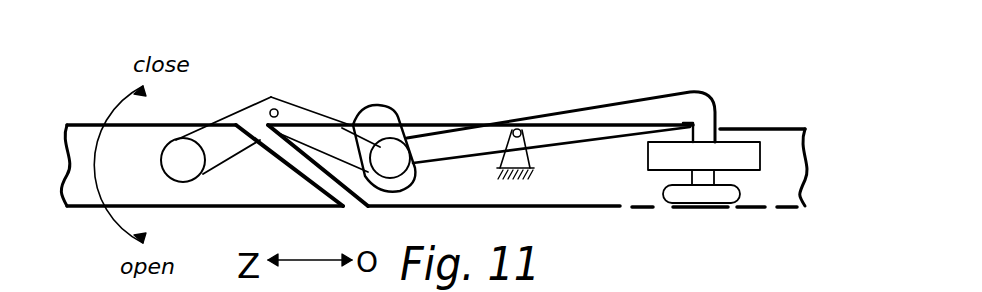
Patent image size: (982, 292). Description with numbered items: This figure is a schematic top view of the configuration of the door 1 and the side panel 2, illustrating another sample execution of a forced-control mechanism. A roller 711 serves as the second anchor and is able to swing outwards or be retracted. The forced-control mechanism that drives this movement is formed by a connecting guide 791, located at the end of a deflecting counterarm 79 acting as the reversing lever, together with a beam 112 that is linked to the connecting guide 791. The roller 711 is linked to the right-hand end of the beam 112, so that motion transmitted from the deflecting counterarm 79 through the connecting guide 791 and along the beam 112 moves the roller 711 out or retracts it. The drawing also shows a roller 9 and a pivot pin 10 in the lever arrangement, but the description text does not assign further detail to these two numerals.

The door 1 is at (97, 163).
The side panel 2 is at (782, 138).
The roller 9 is at (210, 147).
The pivot pin 10 is at (276, 108).
The deflecting counterarm 79 is at (333, 140).
The connecting guide 791 is at (410, 115).
The beam 112 is at (610, 118).
The roller 711 is at (700, 188).